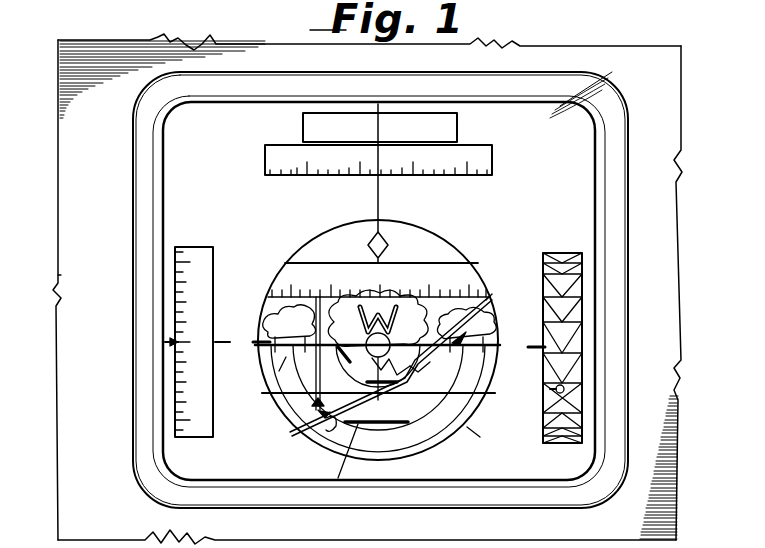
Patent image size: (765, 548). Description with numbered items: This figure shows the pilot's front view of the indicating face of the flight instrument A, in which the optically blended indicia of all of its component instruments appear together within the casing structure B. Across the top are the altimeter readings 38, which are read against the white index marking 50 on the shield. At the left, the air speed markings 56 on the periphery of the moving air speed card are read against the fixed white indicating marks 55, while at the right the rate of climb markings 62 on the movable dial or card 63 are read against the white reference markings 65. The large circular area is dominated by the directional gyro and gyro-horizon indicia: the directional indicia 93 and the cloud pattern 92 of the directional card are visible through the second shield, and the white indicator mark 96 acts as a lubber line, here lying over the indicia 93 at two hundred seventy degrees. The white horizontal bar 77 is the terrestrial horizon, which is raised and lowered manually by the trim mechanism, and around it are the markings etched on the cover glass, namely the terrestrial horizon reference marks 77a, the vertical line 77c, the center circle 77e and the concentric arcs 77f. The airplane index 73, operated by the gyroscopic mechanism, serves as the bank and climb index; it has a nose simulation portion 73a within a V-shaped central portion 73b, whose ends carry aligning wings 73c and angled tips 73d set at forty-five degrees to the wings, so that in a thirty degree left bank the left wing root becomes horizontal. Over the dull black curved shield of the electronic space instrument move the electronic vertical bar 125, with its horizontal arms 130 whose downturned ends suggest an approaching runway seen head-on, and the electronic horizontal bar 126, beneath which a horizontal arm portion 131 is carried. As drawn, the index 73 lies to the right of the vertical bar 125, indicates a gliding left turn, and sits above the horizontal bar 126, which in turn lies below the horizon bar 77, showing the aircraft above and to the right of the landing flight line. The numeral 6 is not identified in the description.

The flight instrument A is at (668, 112).
The casing structure B is at (58, 270).
The bezel 6 is at (560, 106).
The altimeter readings 38 is at (425, 134).
The white index marking 50 is at (385, 112).
The white indicator mark 96 is at (385, 246).
The directional indicia 93 is at (433, 268).
The cloud pattern 92 is at (500, 296).
The rate of climb markings 62 is at (580, 320).
The white reference markings 65 is at (596, 345).
The movable dial or card 63 is at (565, 389).
The air speed markings 56 is at (214, 272).
The fixed white indicating marks 55 is at (170, 345).
The white horizontal bar 77 is at (424, 318).
The center circle 77e is at (345, 316).
The terrestrial horizon reference marks 77a is at (256, 346).
The vertical line 77c is at (385, 425).
The concentric arcs 77f is at (310, 410).
The airplane index 73 is at (302, 434).
The nose simulation portion 73a is at (373, 362).
The V-shaped central portion 73b is at (430, 372).
The aligning wings 73c is at (356, 395).
The angled tip 73d is at (330, 426).
The electronic vertical bar 125 is at (304, 368).
The electronic horizontal bar 126 is at (487, 441).
The horizontal arms 130 is at (278, 360).
The horizontal arm portion 131 is at (344, 461).